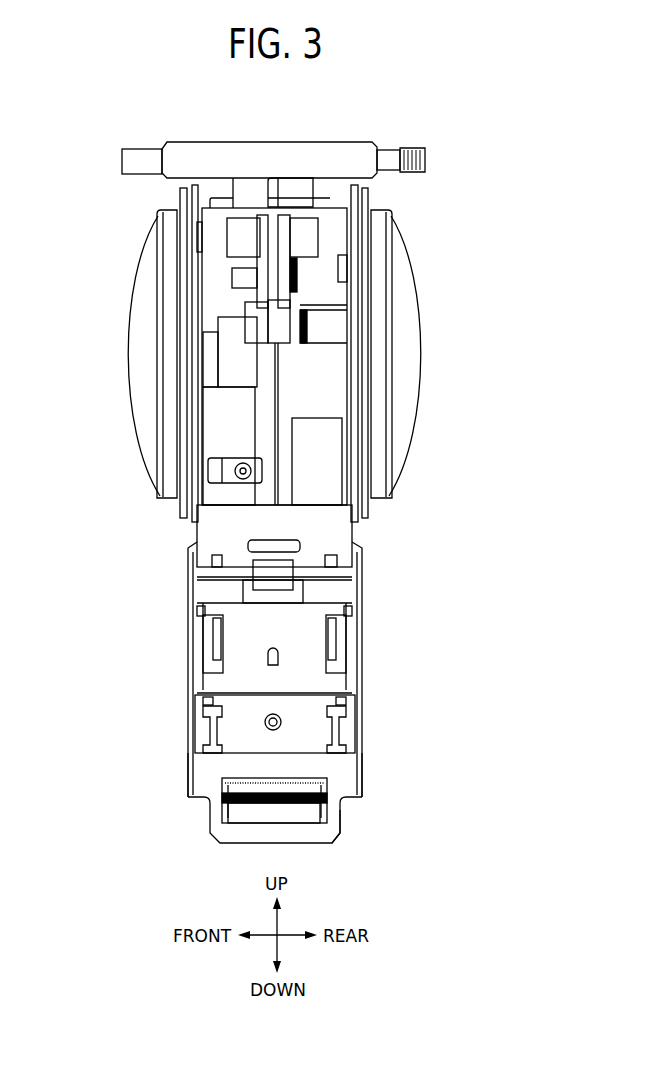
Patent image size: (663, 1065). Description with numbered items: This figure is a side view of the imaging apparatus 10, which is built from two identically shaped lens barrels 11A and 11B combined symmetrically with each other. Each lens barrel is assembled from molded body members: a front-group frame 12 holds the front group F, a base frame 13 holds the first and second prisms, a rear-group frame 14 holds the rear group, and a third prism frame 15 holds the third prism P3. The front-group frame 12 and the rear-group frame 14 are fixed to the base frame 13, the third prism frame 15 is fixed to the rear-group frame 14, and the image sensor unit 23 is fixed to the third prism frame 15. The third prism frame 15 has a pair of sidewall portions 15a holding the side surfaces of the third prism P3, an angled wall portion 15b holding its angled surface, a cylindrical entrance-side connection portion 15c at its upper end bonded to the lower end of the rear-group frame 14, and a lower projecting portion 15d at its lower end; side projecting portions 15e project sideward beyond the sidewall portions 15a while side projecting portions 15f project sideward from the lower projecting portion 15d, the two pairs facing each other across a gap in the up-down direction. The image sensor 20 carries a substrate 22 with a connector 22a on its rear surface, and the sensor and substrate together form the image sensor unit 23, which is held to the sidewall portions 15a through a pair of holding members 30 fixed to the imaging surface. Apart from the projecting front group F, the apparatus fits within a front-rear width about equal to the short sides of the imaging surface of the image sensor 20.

The imaging apparatus 10 is at (390, 128).
The lens barrel 11A is at (152, 205).
The lens barrel 11B is at (393, 205).
The front-group frame 12 is at (170, 228).
The front group F is at (148, 355).
The base frame 13 is at (222, 415).
The rear-group frame 14 is at (330, 534).
The third prism frame 15 is at (370, 625).
The sidewall portion 15a is at (213, 643).
The angled wall portion 15b is at (247, 677).
The entrance-side connection portion 15c is at (332, 593).
The lower projecting portion 15d is at (240, 725).
The side projecting portion 15e is at (198, 612).
The side projecting portion 15f is at (198, 700).
The third prism P3 is at (217, 630).
The holding member 30 is at (198, 667).
The image sensor 20 is at (358, 735).
The substrate 22 is at (343, 768).
The connector 22a is at (245, 800).
The image sensor unit 23 is at (352, 818).